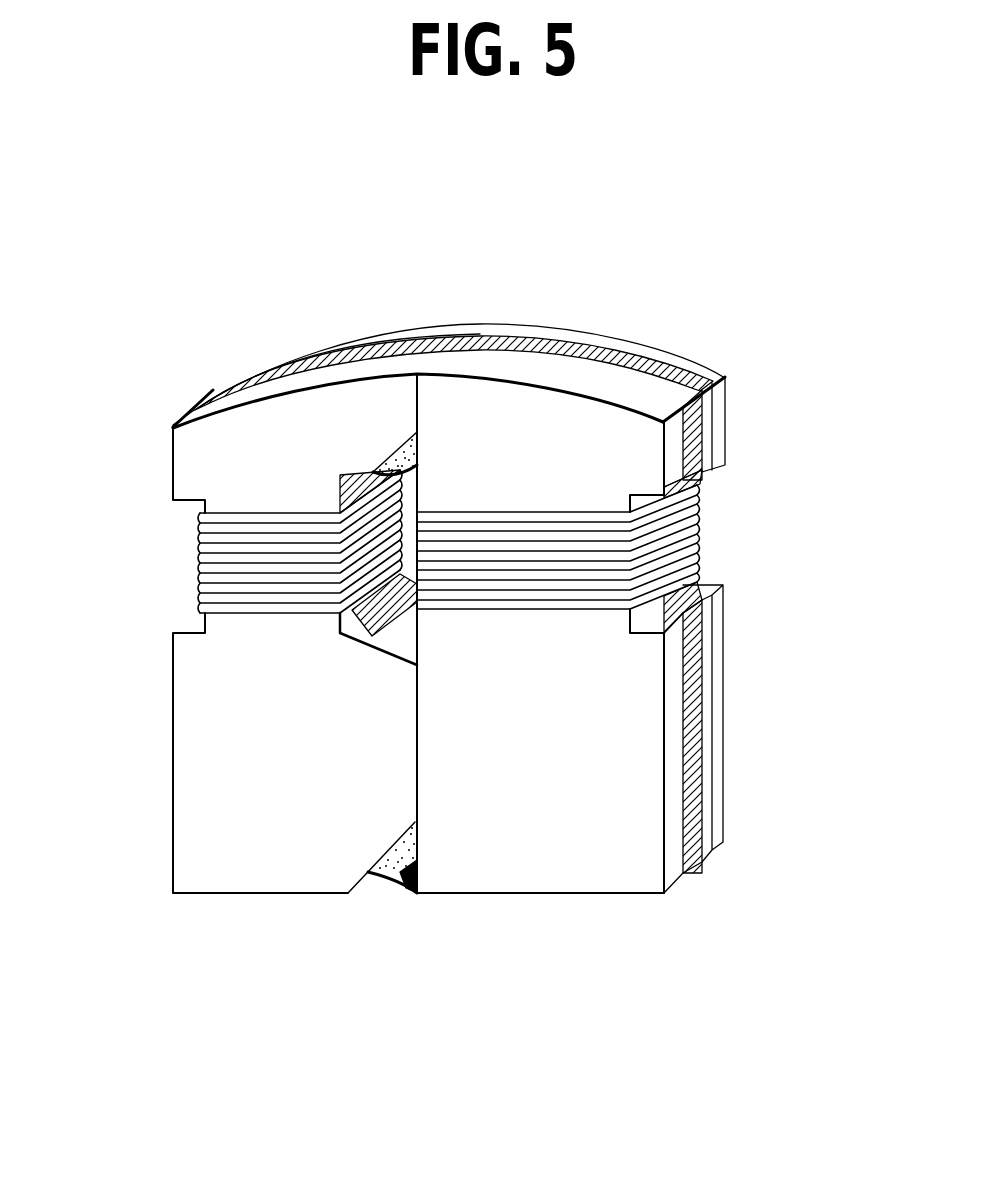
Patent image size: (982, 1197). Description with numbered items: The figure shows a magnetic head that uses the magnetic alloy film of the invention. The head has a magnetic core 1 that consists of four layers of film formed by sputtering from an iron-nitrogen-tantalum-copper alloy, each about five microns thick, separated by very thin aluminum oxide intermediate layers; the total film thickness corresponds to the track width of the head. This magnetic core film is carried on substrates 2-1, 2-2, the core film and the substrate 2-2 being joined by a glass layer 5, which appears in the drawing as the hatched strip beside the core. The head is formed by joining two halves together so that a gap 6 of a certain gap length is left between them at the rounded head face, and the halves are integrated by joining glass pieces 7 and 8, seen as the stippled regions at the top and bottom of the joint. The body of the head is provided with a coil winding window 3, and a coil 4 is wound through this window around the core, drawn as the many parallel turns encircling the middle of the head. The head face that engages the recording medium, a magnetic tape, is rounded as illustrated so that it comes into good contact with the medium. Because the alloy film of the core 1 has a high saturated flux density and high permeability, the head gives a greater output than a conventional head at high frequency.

The magnetic core 1 is at (663, 353).
The substrate 2-1 is at (703, 367).
The substrate 2-2 is at (580, 335).
The coil winding window 3 is at (385, 535).
The coil 4 is at (700, 512).
The glass layer 5 is at (700, 782).
The gap 6 is at (442, 330).
The glass piece 7 is at (387, 450).
The glass piece 8 is at (396, 877).